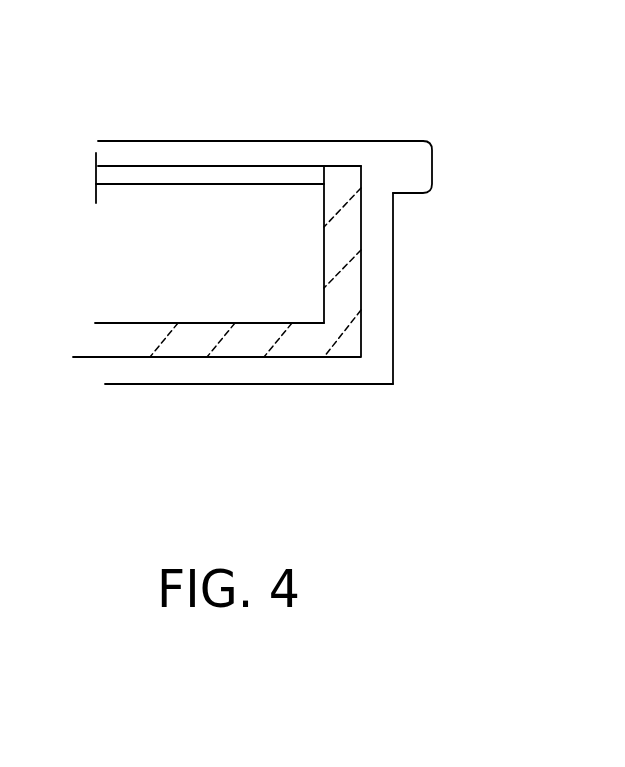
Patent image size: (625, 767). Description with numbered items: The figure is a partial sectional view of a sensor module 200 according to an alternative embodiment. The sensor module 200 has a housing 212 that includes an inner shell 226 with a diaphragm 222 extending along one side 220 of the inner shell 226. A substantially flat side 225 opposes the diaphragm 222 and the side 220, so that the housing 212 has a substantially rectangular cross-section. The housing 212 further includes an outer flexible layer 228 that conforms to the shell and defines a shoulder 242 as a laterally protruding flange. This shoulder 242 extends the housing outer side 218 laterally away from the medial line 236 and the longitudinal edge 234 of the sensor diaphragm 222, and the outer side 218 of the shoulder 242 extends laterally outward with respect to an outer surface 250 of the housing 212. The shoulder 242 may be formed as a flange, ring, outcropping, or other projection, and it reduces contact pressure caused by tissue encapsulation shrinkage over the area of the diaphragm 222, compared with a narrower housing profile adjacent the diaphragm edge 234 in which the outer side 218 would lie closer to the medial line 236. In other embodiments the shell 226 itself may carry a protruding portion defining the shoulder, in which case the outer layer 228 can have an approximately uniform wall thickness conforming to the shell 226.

The sensor module 200 is at (265, 38).
The housing 212 is at (144, 446).
The outer side 218 is at (432, 163).
The side 220 is at (339, 165).
The diaphragm 222 is at (133, 175).
The flat side 225 is at (195, 323).
The inner shell 226 is at (342, 315).
The outer flexible layer 228 is at (217, 384).
The longitudinal edge 234 is at (323, 178).
The medial line 236 is at (95, 190).
The shoulder 242 is at (407, 160).
The outer surface 250 is at (393, 290).